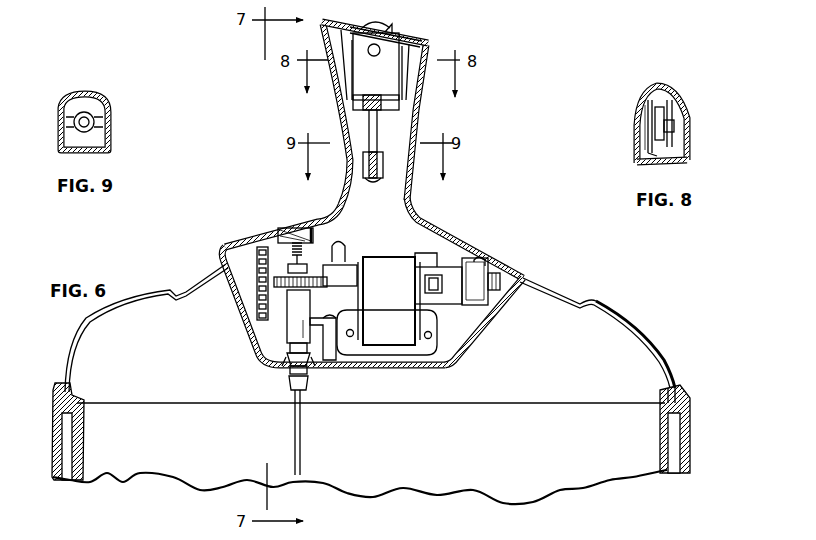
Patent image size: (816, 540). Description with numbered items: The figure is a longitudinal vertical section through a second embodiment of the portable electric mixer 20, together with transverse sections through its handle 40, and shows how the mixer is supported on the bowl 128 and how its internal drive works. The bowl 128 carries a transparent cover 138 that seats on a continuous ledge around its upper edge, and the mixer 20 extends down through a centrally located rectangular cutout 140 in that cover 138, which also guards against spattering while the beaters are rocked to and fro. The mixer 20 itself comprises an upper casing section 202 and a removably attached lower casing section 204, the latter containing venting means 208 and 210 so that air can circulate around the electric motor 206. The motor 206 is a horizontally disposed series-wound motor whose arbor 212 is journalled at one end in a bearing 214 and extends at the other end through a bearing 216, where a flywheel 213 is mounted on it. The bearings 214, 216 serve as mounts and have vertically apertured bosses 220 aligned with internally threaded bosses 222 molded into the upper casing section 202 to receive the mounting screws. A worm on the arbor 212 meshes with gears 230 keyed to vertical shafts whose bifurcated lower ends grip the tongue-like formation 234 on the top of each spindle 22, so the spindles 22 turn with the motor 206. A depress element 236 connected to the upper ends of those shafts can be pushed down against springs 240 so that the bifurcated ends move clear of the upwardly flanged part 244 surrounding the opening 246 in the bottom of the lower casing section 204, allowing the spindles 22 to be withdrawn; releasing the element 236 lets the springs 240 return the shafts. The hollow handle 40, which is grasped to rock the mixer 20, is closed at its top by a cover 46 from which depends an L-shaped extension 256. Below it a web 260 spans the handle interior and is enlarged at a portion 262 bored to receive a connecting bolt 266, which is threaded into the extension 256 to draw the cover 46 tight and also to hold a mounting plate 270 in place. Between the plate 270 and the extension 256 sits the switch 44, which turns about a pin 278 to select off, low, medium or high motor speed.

In FIG. 6, the portable electric mixer 20 is at (434, 204).
In FIG. 6, the spindles 22 is at (302, 438).
In FIG. 6, the handle 40 is at (375, 113).
In FIG. 8, the handle 40 is at (670, 92).
In FIG. 9, the handle 40 is at (110, 106).
In FIG. 6, the switch 44 is at (389, 27).
In FIG. 8, the switch 44 is at (654, 96).
In FIG. 6, the cover 46 is at (418, 38).
In FIG. 6, the bowl 128 is at (694, 413).
In FIG. 6, the cover 138 is at (670, 360).
In FIG. 6, the cutout 140 is at (560, 298).
In FIG. 6, the upper casing section 202 is at (437, 232).
In FIG. 6, the lower casing section 204 is at (445, 363).
In FIG. 6, the electric motor 206 is at (447, 270).
In FIG. 6, the venting means 208 is at (488, 328).
In FIG. 6, the venting means 210 is at (246, 322).
In FIG. 6, the arbor 212 is at (272, 282).
In FIG. 6, the flywheel 213 is at (257, 252).
In FIG. 6, the bearing 214 is at (474, 294).
In FIG. 6, the bearing 216 is at (388, 258).
In FIG. 6, the bosses 220 is at (348, 265).
In FIG. 6, the bosses 222 is at (347, 230).
In FIG. 6, the gears 230 is at (296, 292).
In FIG. 6, the tongue-like formation 234 is at (283, 366).
In FIG. 6, the depress element 236 is at (300, 218).
In FIG. 6, the springs 240 is at (290, 247).
In FIG. 6, the upwardly flanged part 244 is at (318, 362).
In FIG. 6, the opening 246 is at (309, 386).
In FIG. 6, the L-shaped extension 256 is at (362, 90).
In FIG. 8, the L-shaped extension 256 is at (670, 110).
In FIG. 9, the web 260 is at (66, 136).
In FIG. 6, the enlarged portion 262 is at (364, 165).
In FIG. 9, the enlarged portion 262 is at (70, 108).
In FIG. 6, the connecting bolt 266 is at (380, 128).
In FIG. 6, the mounting plate 270 is at (406, 72).
In FIG. 8, the mounting plate 270 is at (648, 108).
In FIG. 8, the pin 278 is at (676, 126).